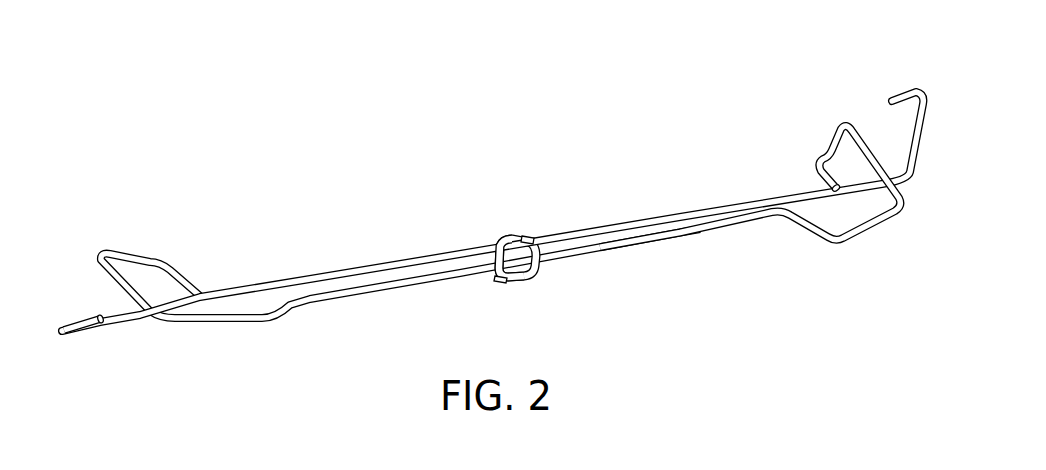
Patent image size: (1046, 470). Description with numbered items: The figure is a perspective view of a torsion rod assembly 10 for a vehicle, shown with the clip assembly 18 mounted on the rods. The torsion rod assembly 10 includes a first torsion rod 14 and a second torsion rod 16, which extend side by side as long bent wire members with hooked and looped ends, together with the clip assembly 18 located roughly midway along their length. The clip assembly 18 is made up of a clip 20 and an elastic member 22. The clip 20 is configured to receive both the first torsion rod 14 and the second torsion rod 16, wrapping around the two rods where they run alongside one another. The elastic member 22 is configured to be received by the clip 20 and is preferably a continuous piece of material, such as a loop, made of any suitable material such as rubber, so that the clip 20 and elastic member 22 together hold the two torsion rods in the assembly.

The torsion rod assembly 10 is at (492, 222).
The first torsion rod 14 is at (347, 272).
The second torsion rod 16 is at (492, 222).
The clip assembly 18 is at (510, 228).
The clip 20 is at (512, 282).
The elastic member 22 is at (535, 266).